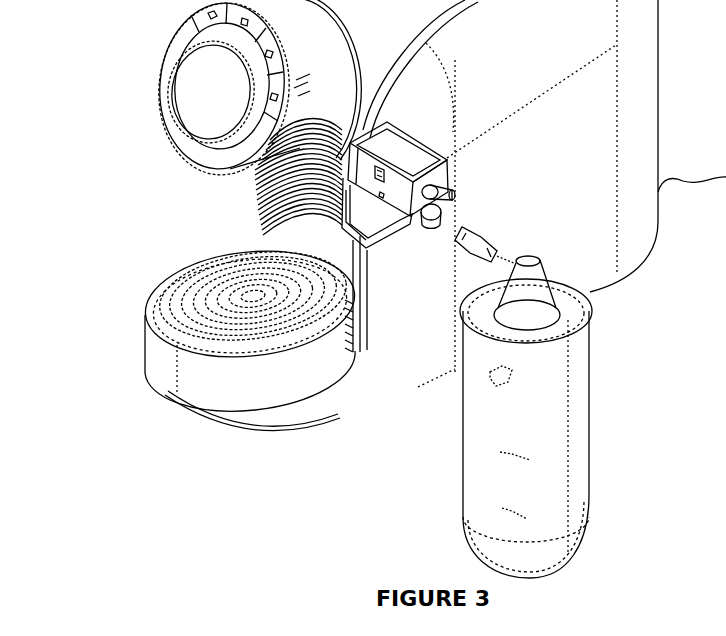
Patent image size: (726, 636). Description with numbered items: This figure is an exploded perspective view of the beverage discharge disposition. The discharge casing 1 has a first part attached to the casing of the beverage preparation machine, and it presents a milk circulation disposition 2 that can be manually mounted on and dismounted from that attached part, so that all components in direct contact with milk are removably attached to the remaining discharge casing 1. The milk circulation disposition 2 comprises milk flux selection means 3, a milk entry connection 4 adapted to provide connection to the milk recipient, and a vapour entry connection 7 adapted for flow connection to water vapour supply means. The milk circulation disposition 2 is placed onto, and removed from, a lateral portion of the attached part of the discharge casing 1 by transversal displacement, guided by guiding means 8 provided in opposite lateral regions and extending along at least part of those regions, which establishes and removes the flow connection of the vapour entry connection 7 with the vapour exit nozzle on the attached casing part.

The discharge casing 1 is at (180, 106).
The milk circulation disposition 2 is at (429, 139).
The milk flux selection means 3 is at (466, 192).
The milk entry connection 4 is at (432, 231).
The vapour entry connection 7 is at (329, 178).
The guiding means 8 is at (372, 216).